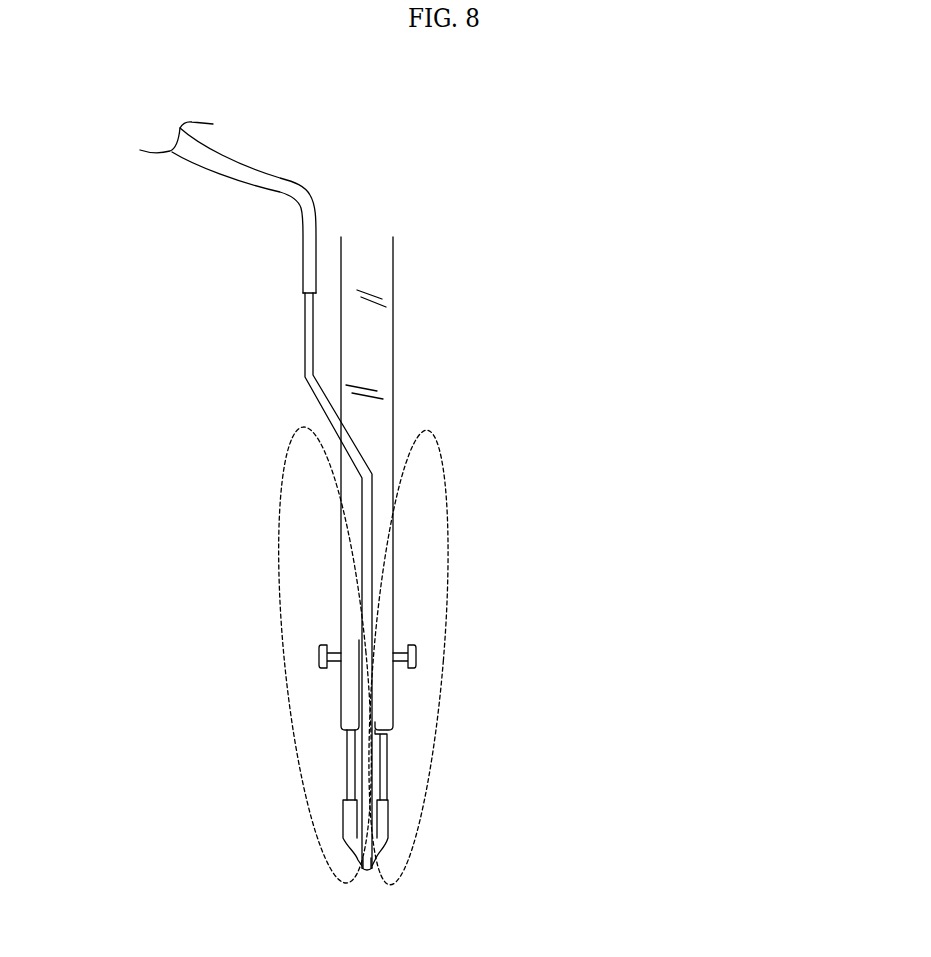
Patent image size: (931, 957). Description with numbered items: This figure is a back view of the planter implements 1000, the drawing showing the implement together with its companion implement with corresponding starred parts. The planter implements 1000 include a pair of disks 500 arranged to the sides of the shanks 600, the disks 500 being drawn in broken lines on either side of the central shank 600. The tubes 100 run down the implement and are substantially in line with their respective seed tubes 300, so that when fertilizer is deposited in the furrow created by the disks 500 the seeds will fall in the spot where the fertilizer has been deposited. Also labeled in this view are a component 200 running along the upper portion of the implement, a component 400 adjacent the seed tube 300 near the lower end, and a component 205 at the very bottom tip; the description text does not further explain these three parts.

The planter implement 1000 is at (640, 244).
The tube 200 is at (288, 182).
The tube 100 is at (378, 612).
The shank 600 is at (380, 522).
The disk 500 is at (284, 604).
The seed tube 300 is at (347, 758).
The second arm member 400 is at (383, 817).
The tube tip 205 is at (363, 878).